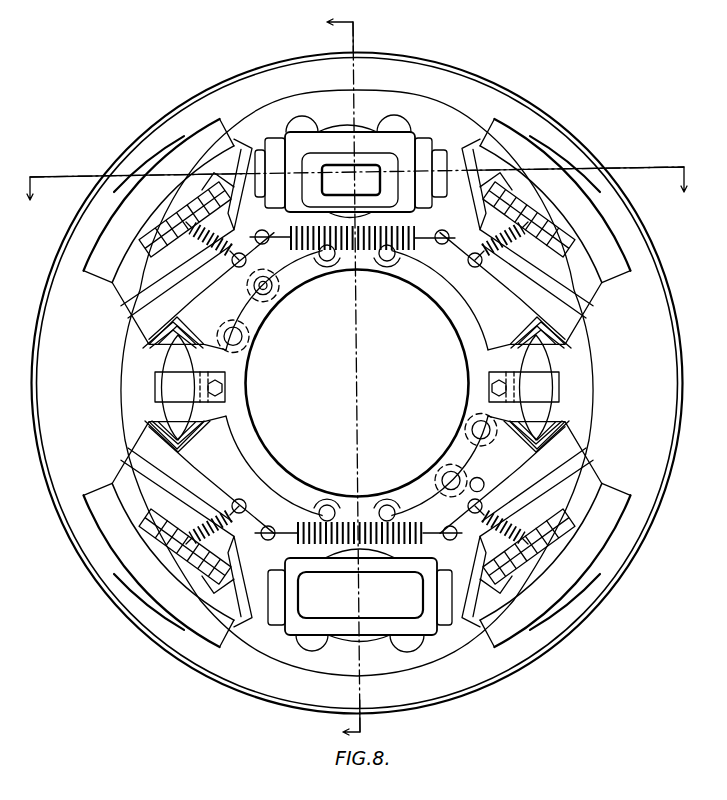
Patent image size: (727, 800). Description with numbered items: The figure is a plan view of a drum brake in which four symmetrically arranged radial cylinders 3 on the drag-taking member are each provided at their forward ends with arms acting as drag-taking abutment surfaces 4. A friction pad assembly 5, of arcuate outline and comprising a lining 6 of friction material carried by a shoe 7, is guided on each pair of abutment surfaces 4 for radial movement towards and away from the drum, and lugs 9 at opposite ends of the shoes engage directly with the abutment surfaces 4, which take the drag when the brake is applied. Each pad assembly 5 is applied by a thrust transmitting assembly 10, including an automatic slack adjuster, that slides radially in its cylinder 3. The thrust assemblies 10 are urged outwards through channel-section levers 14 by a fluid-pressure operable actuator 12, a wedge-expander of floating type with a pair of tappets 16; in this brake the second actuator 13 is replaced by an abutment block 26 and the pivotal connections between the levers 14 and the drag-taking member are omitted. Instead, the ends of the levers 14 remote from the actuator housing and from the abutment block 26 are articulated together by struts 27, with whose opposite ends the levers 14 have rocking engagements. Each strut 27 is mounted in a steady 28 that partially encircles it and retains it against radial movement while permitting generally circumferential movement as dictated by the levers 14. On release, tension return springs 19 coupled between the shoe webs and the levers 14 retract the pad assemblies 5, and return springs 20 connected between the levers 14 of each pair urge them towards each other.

The radial cylinder 3 is at (215, 310).
The drag-taking abutment surface 4 is at (195, 165).
The friction pad assembly 5 is at (100, 203).
The lining 6 is at (108, 215).
The shoe 7 is at (102, 268).
The lug 9 is at (225, 160).
The thrust transmitting assembly 10 is at (268, 282).
The fluid-pressure operable actuator 12 is at (374, 142).
The fluid-pressure operable actuator 13 is at (205, 512).
The lever 14 is at (230, 355).
The tappet 16 is at (440, 166).
The tension return spring 19 is at (450, 318).
The return spring 20 is at (470, 483).
The abutment block 26 is at (392, 605).
The strut 27 is at (170, 420).
The steady 28 is at (195, 402).